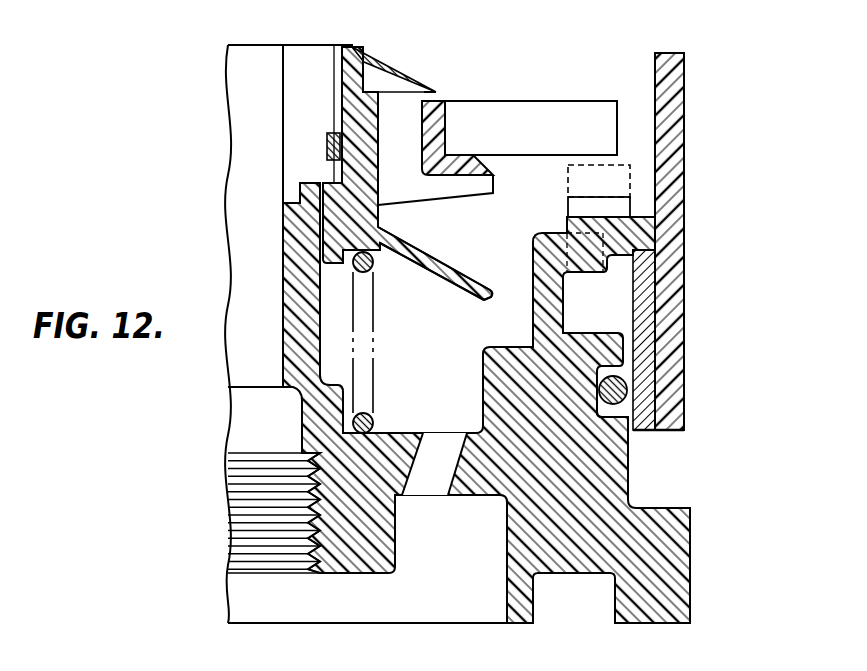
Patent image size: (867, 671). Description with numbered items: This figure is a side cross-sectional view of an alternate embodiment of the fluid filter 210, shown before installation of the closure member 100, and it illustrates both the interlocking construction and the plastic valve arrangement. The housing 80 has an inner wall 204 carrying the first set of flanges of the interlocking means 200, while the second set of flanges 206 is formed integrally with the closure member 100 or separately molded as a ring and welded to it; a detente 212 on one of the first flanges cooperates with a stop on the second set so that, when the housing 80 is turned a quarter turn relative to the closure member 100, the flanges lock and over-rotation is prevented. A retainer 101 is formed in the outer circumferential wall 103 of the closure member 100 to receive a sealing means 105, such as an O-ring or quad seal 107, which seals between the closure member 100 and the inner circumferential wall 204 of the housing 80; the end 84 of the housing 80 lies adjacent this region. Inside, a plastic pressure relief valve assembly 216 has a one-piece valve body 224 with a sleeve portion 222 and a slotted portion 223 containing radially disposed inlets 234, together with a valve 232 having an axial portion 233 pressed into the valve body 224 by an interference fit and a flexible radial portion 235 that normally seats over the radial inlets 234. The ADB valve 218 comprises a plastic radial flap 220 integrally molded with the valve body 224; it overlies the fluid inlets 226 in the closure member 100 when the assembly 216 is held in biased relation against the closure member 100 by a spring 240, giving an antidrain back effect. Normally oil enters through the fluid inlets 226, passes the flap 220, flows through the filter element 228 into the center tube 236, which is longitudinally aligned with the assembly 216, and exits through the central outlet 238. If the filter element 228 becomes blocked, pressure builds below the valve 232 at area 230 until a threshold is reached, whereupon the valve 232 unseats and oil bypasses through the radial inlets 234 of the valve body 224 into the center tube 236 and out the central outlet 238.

The closure member 100 is at (686, 562).
The retainer 101 is at (614, 418).
The outer circumferential wall 103 is at (631, 479).
The sealing means 105 is at (657, 350).
The O-ring or quad seal 107 is at (650, 383).
The housing 80 is at (685, 90).
The sleeve end 84 is at (678, 432).
The interlocking means 200 is at (724, 258).
The inner wall 204 is at (637, 308).
The second set of flanges 206 is at (573, 183).
The fluid filter 210 is at (801, 209).
The detente 212 is at (599, 180).
The pressure relief valve assembly 216 is at (426, 54).
The ADB valve 218 is at (434, 239).
The radial flap 220 is at (458, 283).
The sleeve portion 222 is at (372, 155).
The slotted portion 223 is at (462, 138).
The valve body 224 is at (328, 237).
The fluid inlets 226 is at (429, 488).
The filter element 228 is at (556, 108).
The area 230 is at (340, 84).
The valve 232 is at (432, 91).
The axial portion 233 is at (336, 93).
The radial inlets 234 is at (407, 193).
The radial portion 235 is at (364, 47).
The center tube 236 is at (293, 327).
The central outlet 238 is at (278, 568).
The spring 240 is at (372, 420).